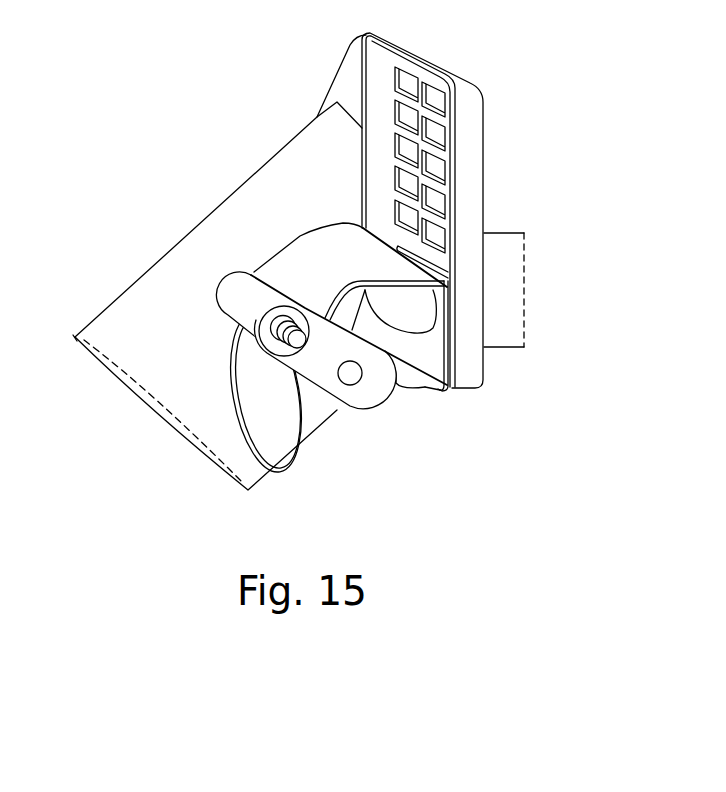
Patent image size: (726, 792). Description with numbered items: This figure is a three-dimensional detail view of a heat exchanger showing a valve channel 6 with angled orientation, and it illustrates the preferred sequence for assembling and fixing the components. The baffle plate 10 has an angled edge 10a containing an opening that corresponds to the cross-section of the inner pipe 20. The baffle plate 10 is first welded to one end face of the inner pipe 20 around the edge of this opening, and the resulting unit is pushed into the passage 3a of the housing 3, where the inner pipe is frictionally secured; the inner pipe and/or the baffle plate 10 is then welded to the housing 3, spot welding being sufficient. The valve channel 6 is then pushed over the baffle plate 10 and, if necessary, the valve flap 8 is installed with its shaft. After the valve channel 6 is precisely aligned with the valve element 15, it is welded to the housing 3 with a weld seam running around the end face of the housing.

The housing 3 is at (423, 64).
The passage 3a is at (513, 278).
The valve channel 6 is at (125, 318).
The valve flap 8 is at (280, 425).
The baffle plate 10 is at (318, 257).
The angled edge 10a is at (430, 356).
The valve element 15 is at (200, 260).
The inner pipe 20 is at (413, 315).